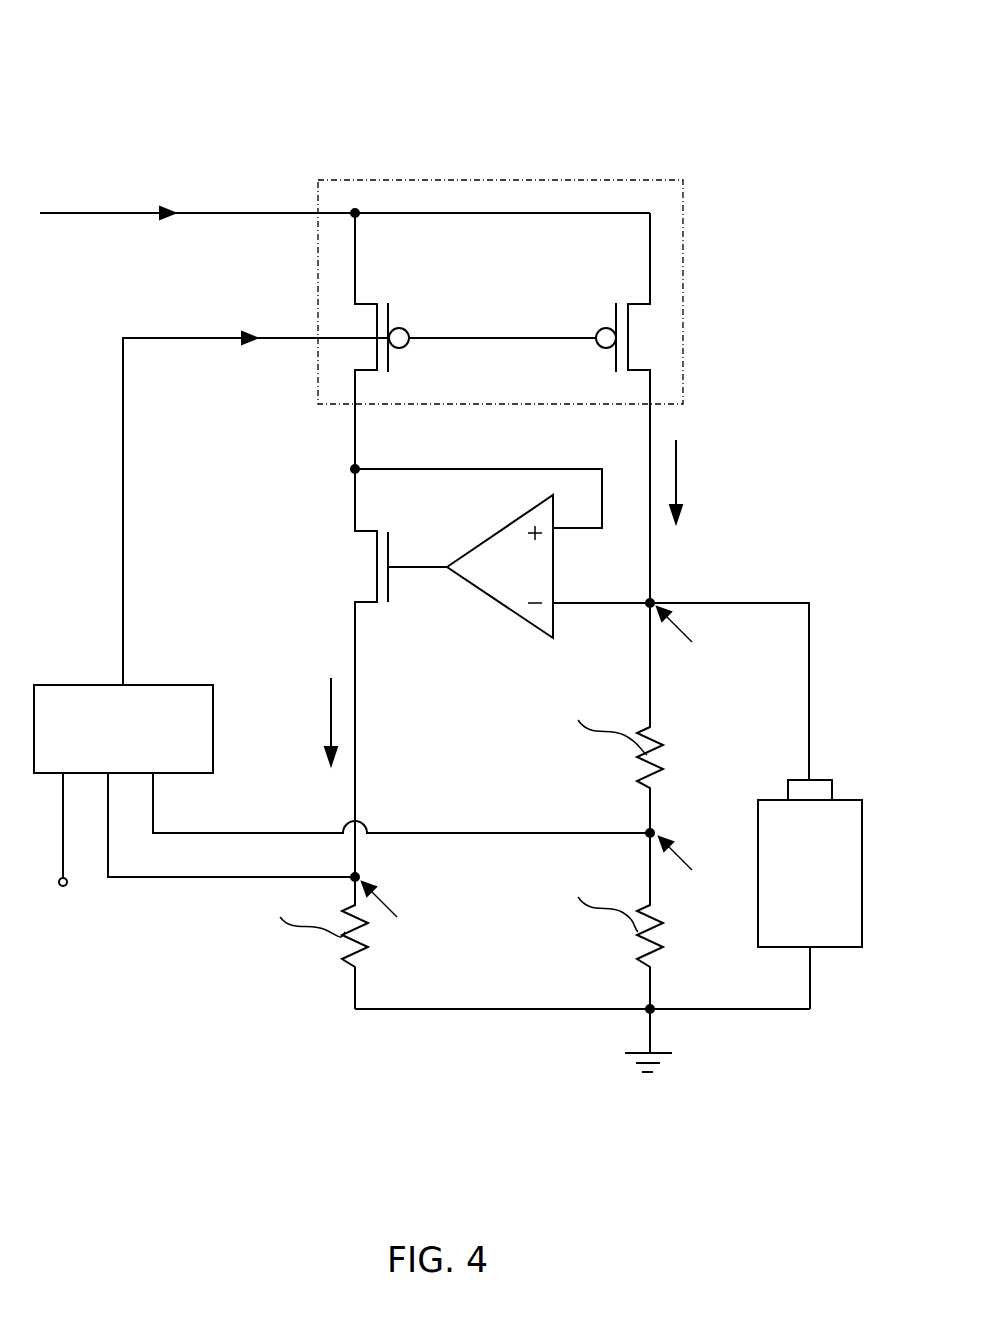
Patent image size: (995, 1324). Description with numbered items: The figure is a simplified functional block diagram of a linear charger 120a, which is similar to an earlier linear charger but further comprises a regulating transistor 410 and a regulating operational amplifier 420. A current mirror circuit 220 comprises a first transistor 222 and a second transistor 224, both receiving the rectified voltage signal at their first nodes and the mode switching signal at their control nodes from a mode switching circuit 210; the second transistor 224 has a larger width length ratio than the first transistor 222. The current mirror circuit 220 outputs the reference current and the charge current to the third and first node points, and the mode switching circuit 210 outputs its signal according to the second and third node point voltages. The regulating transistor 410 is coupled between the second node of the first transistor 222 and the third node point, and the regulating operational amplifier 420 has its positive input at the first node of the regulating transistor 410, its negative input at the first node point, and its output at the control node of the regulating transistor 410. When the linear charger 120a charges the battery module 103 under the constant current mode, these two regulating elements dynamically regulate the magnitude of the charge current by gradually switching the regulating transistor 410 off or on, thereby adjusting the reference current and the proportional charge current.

The linear charger 120a is at (92, 24).
The current mirror circuit 220 is at (503, 180).
The first transistor 222 is at (366, 303).
The second transistor 224 is at (640, 303).
The regulating transistor 410 is at (377, 578).
The regulating operational amplifier 420 is at (511, 579).
The mode switching circuit 210 is at (143, 742).
The battery module 103 is at (830, 886).